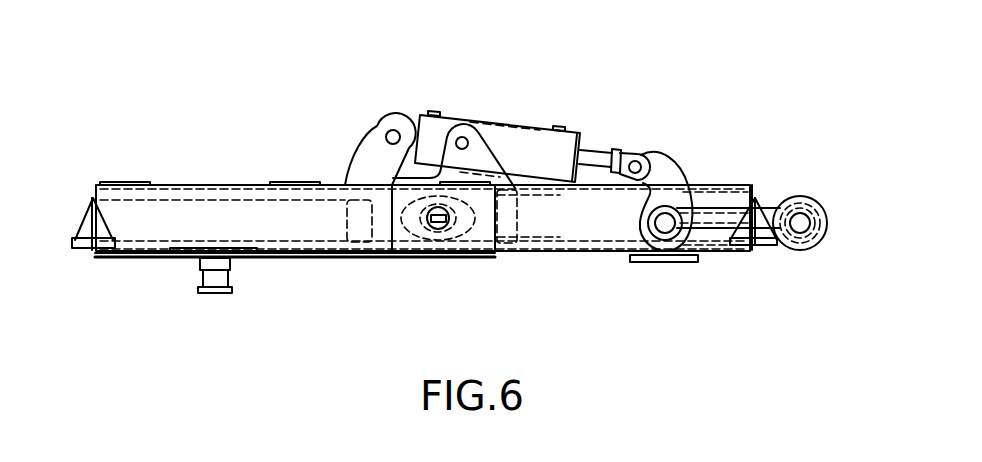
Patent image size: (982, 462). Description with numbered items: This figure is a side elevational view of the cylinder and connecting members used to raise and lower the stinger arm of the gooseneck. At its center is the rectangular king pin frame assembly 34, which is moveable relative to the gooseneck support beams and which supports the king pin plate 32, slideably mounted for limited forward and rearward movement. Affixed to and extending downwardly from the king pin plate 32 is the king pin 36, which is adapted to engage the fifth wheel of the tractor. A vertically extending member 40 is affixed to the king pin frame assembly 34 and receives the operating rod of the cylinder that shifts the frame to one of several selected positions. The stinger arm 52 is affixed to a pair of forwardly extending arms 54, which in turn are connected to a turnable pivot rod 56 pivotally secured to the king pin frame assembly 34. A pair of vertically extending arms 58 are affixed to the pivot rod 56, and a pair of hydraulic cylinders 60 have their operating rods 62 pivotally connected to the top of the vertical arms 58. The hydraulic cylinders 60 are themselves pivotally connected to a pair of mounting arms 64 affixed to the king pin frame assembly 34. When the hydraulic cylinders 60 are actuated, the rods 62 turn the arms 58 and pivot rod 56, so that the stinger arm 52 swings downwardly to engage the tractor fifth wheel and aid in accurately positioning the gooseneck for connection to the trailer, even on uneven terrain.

The king pin plate 32 is at (177, 258).
The king pin frame assembly 34 is at (210, 184).
The king pin 36 is at (222, 278).
The vertically extending member 40 is at (462, 133).
The stinger arm 52 is at (805, 198).
The forwardly extending arms 54 is at (718, 232).
The pivot rod 56 is at (662, 227).
The vertically extending arms 58 is at (662, 168).
The hydraulic cylinders 60 is at (508, 137).
The operating rods 62 is at (597, 150).
The mounting arms 64 is at (368, 140).